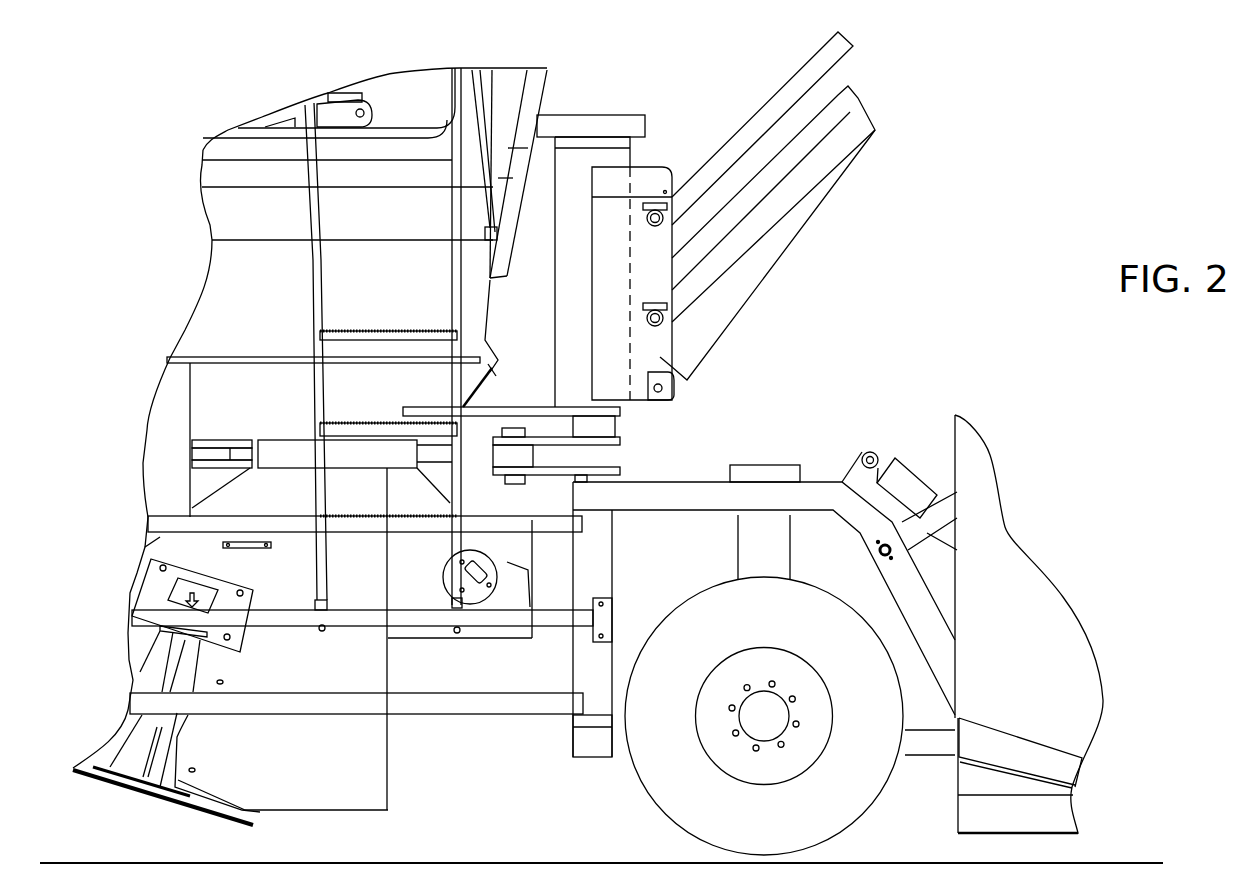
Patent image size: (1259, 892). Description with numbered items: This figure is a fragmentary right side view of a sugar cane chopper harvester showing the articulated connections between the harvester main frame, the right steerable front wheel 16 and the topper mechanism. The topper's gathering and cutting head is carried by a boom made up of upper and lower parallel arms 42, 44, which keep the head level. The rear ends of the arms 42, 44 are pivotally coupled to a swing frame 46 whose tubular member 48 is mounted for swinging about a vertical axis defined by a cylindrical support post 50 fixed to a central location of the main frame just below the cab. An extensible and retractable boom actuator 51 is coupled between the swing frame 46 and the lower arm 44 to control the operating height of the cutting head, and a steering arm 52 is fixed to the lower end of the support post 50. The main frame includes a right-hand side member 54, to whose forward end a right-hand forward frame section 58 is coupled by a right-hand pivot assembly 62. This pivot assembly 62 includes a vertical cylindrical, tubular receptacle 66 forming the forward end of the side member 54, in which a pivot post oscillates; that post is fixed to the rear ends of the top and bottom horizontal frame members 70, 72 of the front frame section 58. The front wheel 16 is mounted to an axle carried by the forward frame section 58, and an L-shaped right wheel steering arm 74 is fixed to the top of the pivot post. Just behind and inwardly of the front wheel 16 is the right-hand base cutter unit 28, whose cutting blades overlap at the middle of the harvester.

The steerable front wheel 16 is at (663, 812).
The base cutter unit 28 is at (143, 797).
The upper parallel arm 42 is at (787, 78).
The lower parallel arm 44 is at (838, 92).
The swing frame 46 is at (653, 167).
The tubular member 48 is at (550, 262).
The cylindrical support post 50 is at (620, 400).
The boom actuator 51 is at (781, 265).
The steering arm 52 is at (545, 408).
The right-hand side member 54 is at (407, 716).
The right-hand forward frame section 58 is at (686, 556).
The right-hand pivot assembly 62 is at (540, 663).
The tubular receptacle 66 is at (603, 580).
The top horizontal frame member 70 is at (596, 758).
The bottom horizontal frame member 72 is at (707, 477).
The right wheel steering arm 74 is at (557, 478).